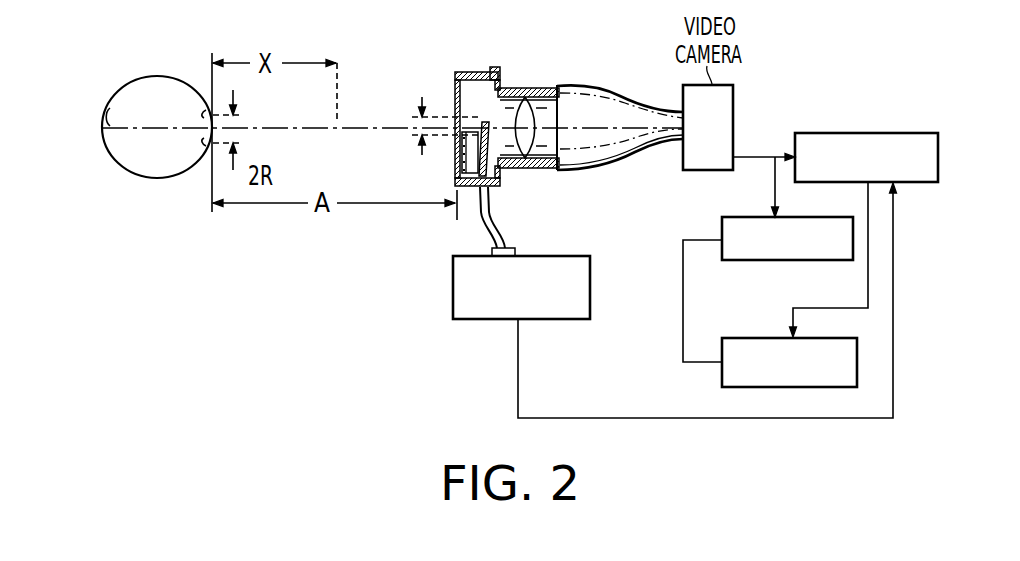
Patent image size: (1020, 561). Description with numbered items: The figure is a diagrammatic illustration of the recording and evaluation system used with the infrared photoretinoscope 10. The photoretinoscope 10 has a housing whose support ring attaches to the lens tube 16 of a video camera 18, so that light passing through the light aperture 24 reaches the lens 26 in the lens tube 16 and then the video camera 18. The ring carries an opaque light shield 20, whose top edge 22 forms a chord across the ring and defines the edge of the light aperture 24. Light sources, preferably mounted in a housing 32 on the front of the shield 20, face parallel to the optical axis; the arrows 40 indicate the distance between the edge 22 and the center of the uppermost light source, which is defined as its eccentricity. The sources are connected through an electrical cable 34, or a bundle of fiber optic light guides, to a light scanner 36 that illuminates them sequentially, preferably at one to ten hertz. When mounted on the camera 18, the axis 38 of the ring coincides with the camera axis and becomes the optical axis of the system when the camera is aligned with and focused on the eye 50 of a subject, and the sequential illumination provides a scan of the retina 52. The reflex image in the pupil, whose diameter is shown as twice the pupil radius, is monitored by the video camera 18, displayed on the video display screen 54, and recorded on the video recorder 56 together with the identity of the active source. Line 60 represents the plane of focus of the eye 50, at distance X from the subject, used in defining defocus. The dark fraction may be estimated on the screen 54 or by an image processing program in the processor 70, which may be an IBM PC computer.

The infrared photoretinoscope 10 is at (446, 105).
The lens tube 16 is at (526, 96).
The video camera 18 is at (627, 94).
The opaque light shield 20 is at (498, 174).
The top edge 22 is at (483, 123).
The light aperture 24 is at (461, 66).
The lens 26 is at (527, 147).
The housing 32 is at (470, 161).
The electrical cable 34 is at (477, 222).
The light scanner 36 is at (590, 262).
The axis 38 is at (302, 126).
The arrows 40 is at (421, 150).
The eye 50 is at (155, 76).
The retina 52 is at (111, 109).
The video display screen 54 is at (730, 216).
The video recorder 56 is at (850, 132).
The plane of focus 60 is at (339, 72).
The processor 70 is at (749, 337).